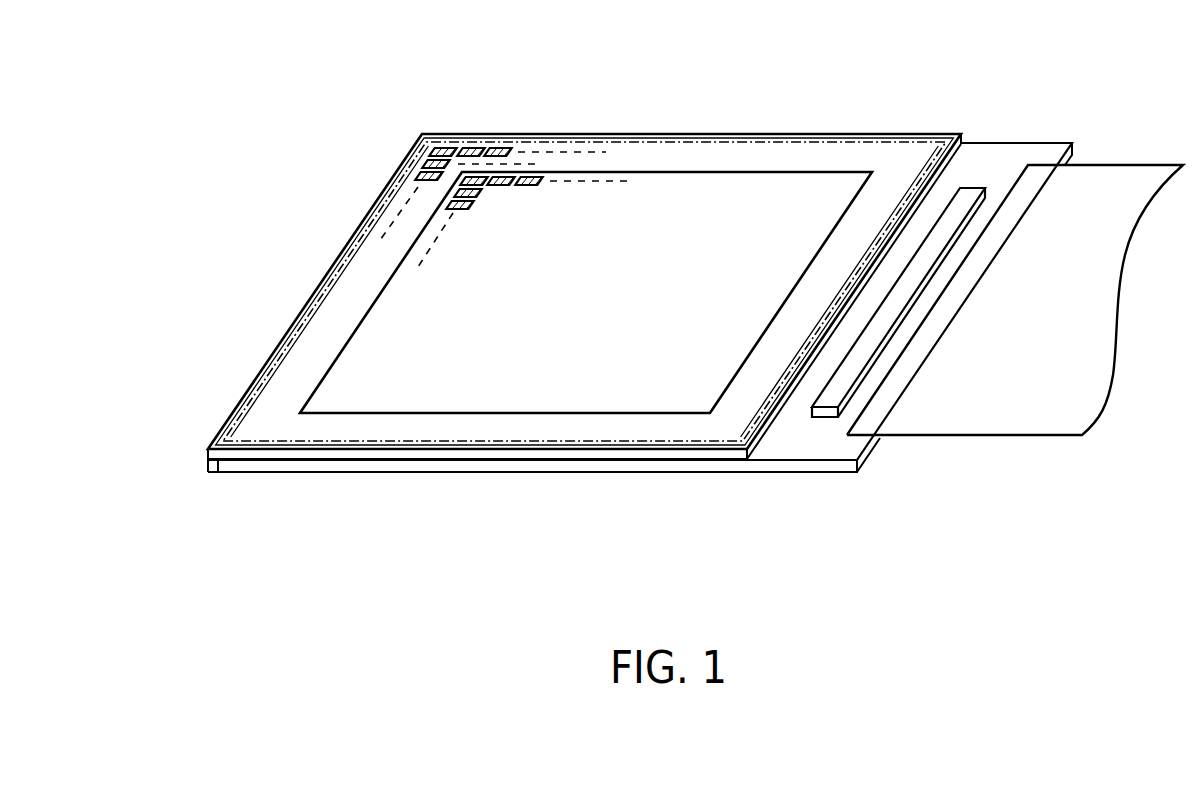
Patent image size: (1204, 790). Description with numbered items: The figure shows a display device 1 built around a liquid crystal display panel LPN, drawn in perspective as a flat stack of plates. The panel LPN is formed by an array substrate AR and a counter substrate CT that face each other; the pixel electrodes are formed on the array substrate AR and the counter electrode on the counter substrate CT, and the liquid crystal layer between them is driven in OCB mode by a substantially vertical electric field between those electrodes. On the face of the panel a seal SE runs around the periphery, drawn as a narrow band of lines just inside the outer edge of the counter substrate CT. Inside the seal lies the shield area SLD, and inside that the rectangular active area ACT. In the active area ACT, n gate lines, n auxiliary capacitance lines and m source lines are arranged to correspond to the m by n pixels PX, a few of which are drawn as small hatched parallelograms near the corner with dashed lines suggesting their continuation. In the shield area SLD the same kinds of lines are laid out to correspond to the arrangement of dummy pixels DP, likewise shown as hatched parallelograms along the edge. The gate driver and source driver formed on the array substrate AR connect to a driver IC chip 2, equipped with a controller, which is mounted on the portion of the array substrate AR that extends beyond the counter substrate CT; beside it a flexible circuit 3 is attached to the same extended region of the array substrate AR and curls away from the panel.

The display device 1 is at (916, 98).
The driver IC chip 2 is at (981, 187).
The flexible printed circuit 3 is at (1022, 423).
The liquid crystal display panel LPN is at (845, 488).
The counter substrate CT is at (226, 456).
The array substrate AR is at (285, 467).
The seal SE is at (273, 342).
The shield area SLD is at (744, 148).
The active area ACT is at (684, 185).
The dummy pixel DP is at (500, 150).
The pixel PX is at (543, 178).